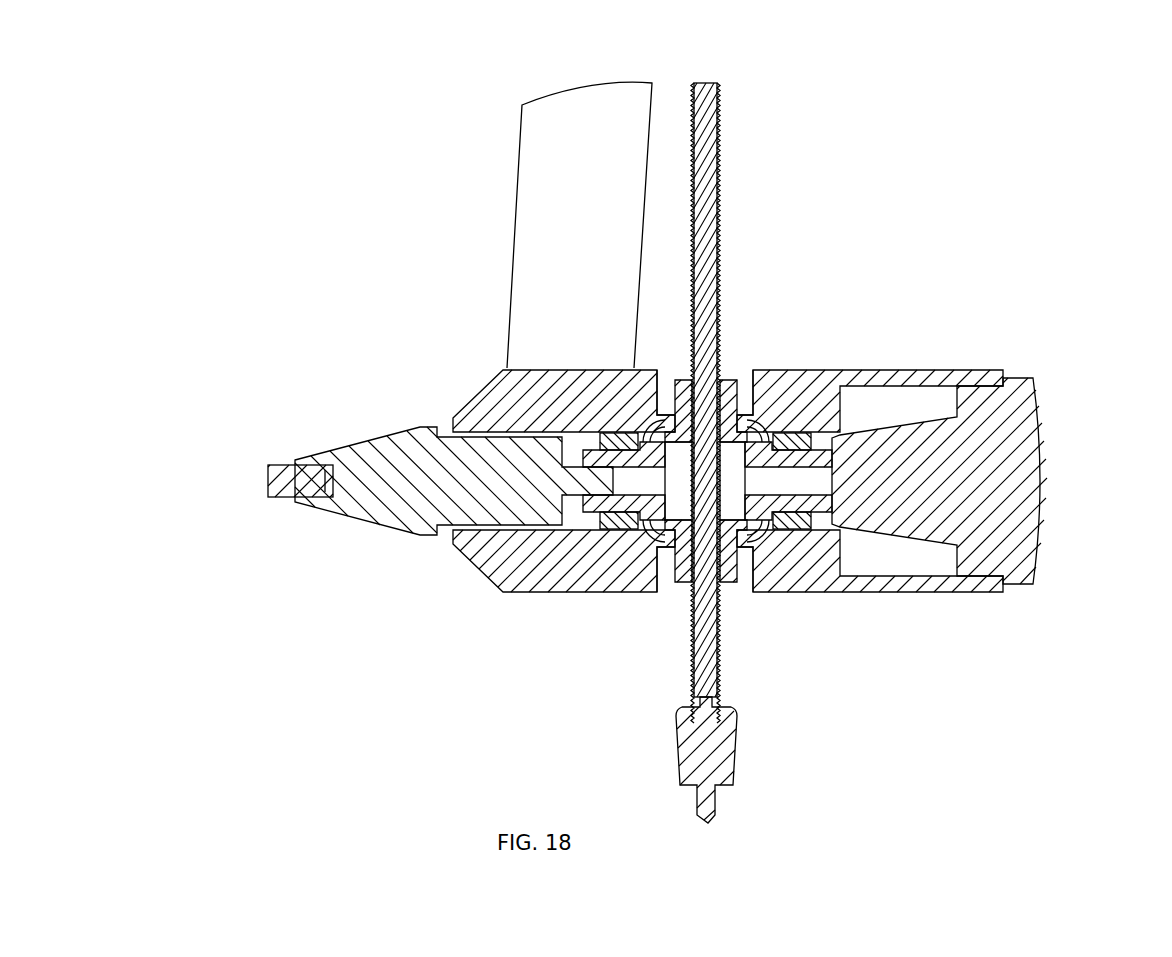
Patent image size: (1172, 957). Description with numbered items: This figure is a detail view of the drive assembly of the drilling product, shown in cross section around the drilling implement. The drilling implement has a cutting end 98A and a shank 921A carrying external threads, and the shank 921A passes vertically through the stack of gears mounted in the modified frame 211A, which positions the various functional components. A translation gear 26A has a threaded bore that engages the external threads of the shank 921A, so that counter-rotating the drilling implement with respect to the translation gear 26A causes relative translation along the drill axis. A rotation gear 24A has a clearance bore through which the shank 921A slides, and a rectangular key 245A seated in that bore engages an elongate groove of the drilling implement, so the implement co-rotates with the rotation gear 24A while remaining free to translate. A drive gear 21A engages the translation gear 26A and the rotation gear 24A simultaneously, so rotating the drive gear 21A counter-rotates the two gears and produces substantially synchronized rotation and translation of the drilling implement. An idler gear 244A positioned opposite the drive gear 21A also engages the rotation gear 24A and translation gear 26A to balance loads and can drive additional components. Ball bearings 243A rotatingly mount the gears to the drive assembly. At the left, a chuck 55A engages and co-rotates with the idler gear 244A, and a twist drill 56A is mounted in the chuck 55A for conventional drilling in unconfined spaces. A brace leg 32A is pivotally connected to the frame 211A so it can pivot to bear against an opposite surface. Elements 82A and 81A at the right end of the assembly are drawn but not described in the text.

The leg 32A is at (517, 187).
The shank 921A is at (724, 128).
The translation gear 26A is at (727, 368).
The ball bearing 243A is at (750, 368).
The end member 82A is at (828, 372).
The housing cap 81A is at (1013, 378).
The chuck 55A is at (400, 427).
The frame 211A is at (477, 393).
The twist drill 56A is at (284, 465).
The idler gear 244A is at (586, 505).
The rectangular key 245A is at (752, 520).
The rotation gear 24A is at (735, 593).
The drive gear 21A is at (817, 518).
The cutting end 98A is at (708, 823).